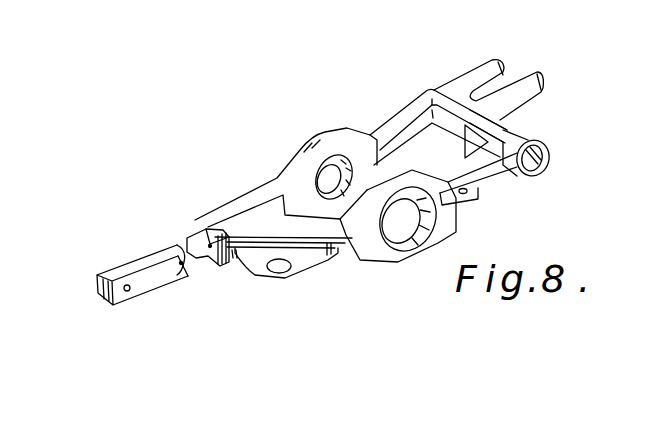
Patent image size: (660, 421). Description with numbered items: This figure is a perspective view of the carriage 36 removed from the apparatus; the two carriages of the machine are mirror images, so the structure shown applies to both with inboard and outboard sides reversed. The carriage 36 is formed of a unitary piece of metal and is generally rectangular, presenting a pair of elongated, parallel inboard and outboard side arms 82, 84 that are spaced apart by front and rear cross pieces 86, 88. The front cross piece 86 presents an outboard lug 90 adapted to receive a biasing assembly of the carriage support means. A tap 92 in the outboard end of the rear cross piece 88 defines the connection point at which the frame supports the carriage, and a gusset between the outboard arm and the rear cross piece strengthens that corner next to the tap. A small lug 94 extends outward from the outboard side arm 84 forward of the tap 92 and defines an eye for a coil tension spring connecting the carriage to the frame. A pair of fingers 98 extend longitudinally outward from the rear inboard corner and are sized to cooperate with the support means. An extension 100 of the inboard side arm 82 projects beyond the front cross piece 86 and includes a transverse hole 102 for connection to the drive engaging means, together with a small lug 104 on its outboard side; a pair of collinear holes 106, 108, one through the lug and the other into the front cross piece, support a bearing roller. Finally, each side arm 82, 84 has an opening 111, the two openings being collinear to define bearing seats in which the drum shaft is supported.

The carriage 36 is at (248, 167).
The inboard side arm 82 is at (413, 105).
The outboard side arm 84 is at (473, 178).
The front cross piece 86 is at (242, 247).
The rear cross piece 88 is at (495, 127).
The outboard lug 90 is at (303, 265).
The tap 92 is at (548, 165).
The small lug 94 is at (468, 207).
The fingers 98 is at (518, 85).
The extension 100 is at (138, 258).
The transverse hole 102 is at (128, 292).
The small lug 104 is at (188, 277).
The hole 106 is at (178, 263).
The hole 108 is at (210, 244).
The opening 111 is at (413, 238).